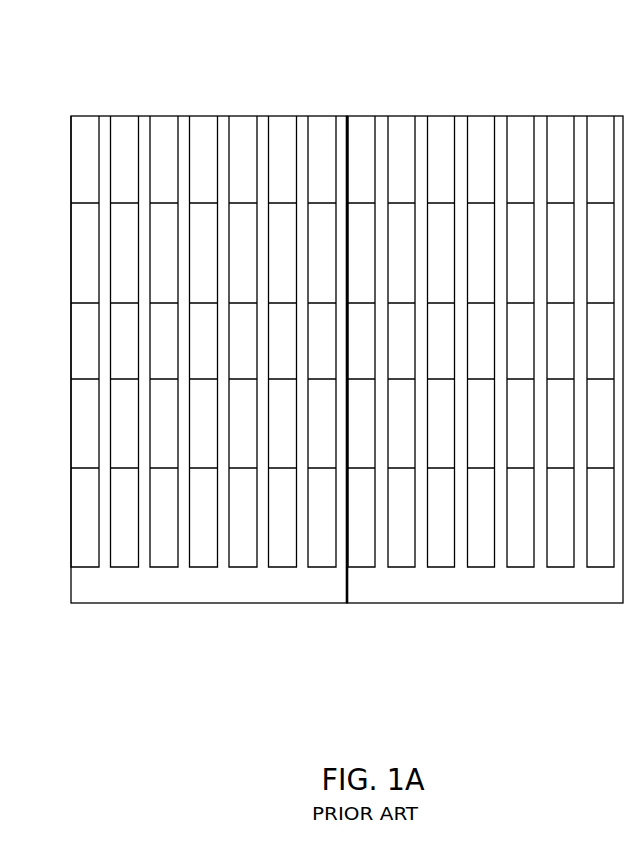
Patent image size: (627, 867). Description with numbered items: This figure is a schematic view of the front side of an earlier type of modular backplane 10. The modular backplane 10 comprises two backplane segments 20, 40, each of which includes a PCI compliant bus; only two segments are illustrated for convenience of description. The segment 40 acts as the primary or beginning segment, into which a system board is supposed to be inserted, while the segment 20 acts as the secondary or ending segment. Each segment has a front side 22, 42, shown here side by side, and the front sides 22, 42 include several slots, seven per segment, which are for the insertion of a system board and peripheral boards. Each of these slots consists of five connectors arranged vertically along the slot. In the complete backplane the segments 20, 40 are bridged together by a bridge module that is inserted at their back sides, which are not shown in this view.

The modular backplane 10 is at (332, 17).
The backplane segment 20 is at (343, 88).
The backplane segment 40 is at (621, 88).
The front side 22 is at (148, 583).
The front side 42 is at (455, 583).